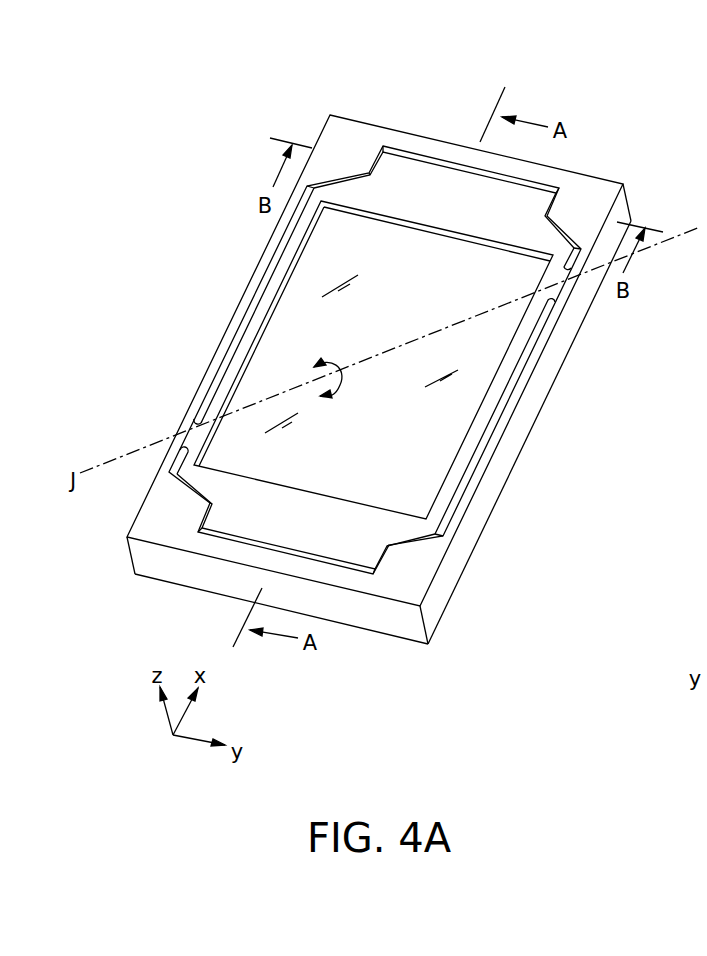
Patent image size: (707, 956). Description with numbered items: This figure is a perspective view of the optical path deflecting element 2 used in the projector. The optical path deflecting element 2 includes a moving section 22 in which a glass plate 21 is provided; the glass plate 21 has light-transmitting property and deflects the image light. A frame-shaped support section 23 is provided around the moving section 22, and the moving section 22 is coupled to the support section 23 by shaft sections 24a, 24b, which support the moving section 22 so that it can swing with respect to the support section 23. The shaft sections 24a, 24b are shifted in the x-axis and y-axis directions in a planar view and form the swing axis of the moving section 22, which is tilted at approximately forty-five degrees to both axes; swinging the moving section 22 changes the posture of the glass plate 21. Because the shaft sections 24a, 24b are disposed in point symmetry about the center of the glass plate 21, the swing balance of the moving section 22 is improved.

The optical path deflecting element 2 is at (375, 350).
The glass plate 21 is at (293, 316).
The moving section 22 is at (400, 172).
The support section 23 is at (176, 508).
The shaft section 24a is at (190, 433).
The shaft section 24b is at (560, 286).